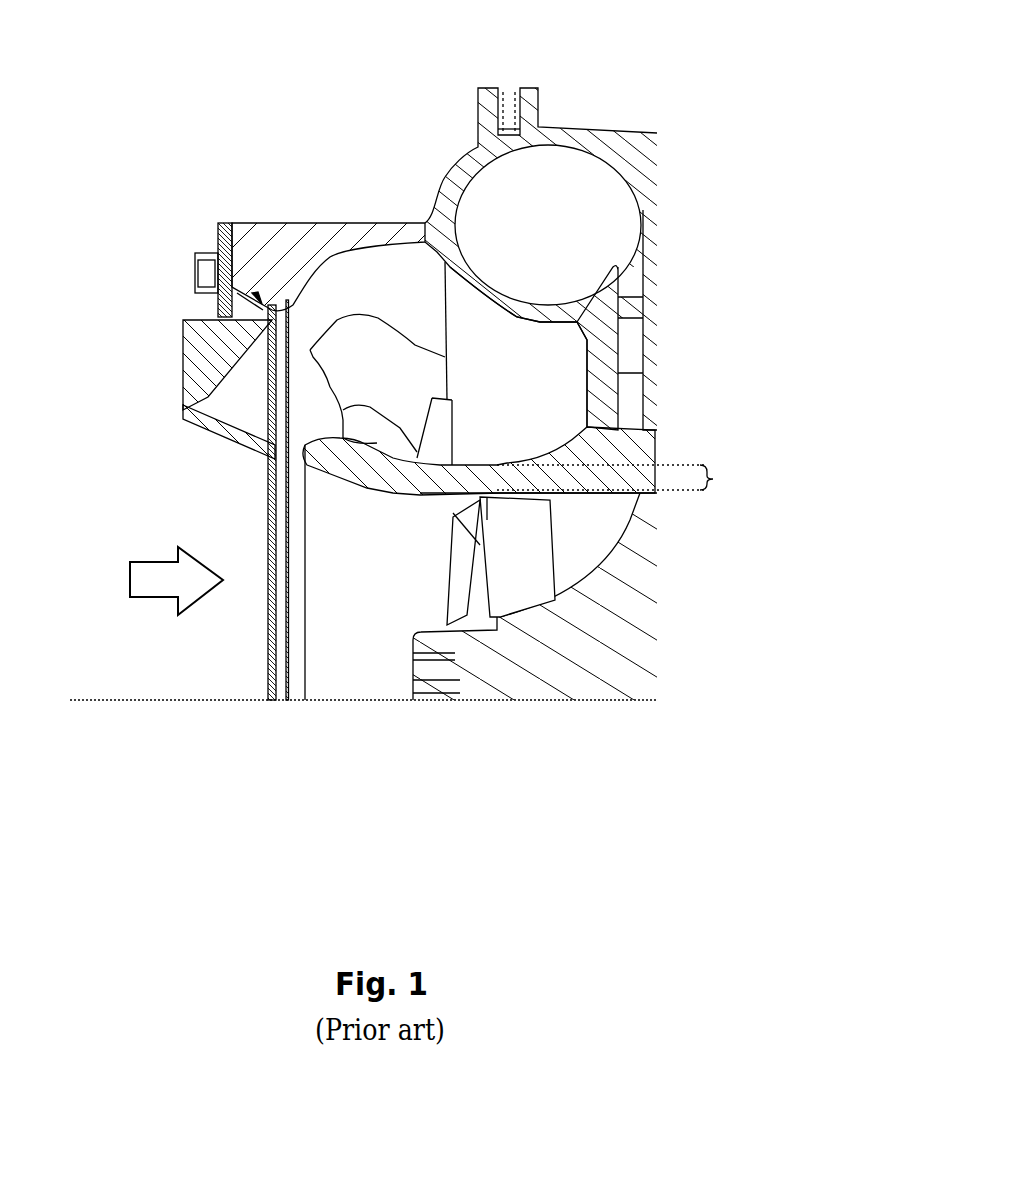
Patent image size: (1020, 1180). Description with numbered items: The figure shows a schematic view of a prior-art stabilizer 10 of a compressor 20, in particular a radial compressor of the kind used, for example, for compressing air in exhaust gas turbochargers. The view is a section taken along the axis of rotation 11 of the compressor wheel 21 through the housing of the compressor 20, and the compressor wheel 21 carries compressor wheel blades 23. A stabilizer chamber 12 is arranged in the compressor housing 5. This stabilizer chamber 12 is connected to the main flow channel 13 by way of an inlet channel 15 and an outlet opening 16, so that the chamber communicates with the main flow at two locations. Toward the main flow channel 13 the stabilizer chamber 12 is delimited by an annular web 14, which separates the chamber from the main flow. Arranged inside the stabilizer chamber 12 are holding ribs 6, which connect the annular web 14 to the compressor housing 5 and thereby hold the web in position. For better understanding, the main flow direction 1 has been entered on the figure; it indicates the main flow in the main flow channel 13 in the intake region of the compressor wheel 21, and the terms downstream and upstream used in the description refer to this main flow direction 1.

The main flow direction 1 is at (197, 596).
The compressor housing 5 is at (403, 127).
The holding ribs 6 is at (370, 325).
The stabilizer 10 is at (351, 288).
The axis of rotation 11 is at (336, 697).
The stabilizer chamber 12 is at (489, 362).
The main flow channel 13 is at (366, 589).
The annular web 14 is at (433, 463).
The inlet channel 15 is at (625, 480).
The outlet opening 16 is at (290, 452).
The compressor 20 is at (684, 35).
The compressor wheel 21 is at (583, 683).
The compressor wheel blades 23 is at (447, 615).